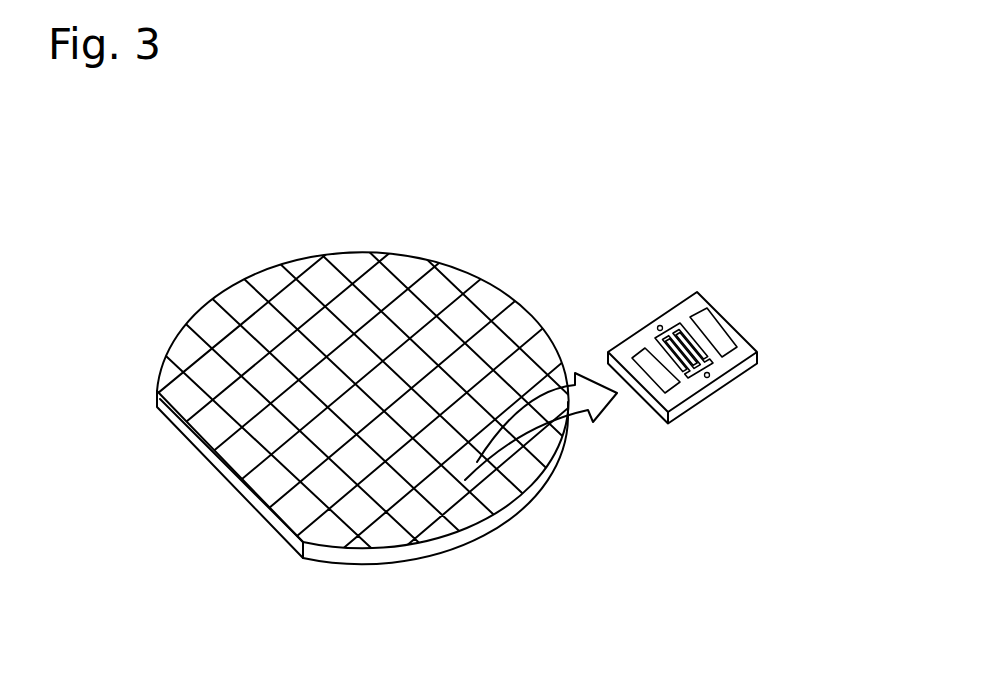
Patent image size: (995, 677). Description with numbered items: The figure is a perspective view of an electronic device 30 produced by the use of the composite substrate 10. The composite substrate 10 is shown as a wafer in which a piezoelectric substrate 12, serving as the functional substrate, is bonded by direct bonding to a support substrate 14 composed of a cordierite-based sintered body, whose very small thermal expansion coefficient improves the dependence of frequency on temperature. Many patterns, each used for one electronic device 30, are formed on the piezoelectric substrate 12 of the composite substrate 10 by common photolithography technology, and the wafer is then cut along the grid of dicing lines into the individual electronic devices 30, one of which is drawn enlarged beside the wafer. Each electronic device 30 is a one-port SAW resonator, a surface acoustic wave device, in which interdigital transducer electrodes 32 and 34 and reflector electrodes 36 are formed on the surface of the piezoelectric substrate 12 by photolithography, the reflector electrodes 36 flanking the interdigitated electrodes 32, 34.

The composite substrate 10 is at (553, 283).
The piezoelectric substrate 12 is at (450, 533).
The support substrate 14 is at (422, 558).
The electronic device 30 is at (719, 317).
The interdigital transducer (IDT) electrode 32 is at (668, 333).
The interdigital transducer (IDT) electrode 34 is at (708, 364).
The reflector electrode 36 is at (643, 352).